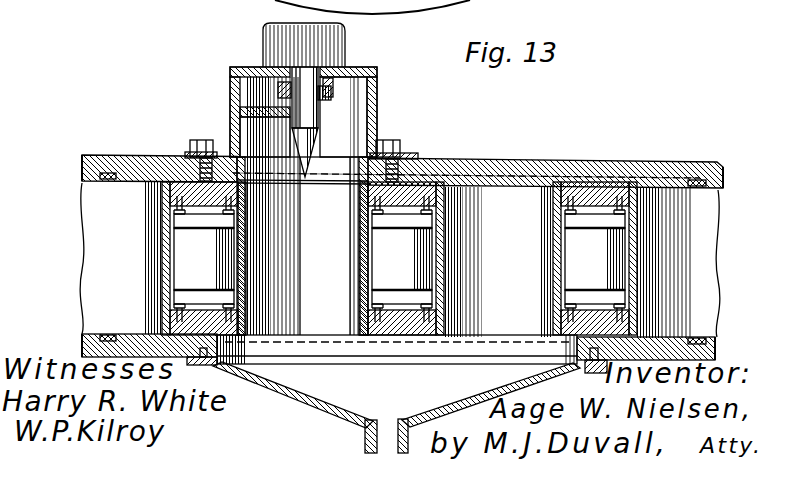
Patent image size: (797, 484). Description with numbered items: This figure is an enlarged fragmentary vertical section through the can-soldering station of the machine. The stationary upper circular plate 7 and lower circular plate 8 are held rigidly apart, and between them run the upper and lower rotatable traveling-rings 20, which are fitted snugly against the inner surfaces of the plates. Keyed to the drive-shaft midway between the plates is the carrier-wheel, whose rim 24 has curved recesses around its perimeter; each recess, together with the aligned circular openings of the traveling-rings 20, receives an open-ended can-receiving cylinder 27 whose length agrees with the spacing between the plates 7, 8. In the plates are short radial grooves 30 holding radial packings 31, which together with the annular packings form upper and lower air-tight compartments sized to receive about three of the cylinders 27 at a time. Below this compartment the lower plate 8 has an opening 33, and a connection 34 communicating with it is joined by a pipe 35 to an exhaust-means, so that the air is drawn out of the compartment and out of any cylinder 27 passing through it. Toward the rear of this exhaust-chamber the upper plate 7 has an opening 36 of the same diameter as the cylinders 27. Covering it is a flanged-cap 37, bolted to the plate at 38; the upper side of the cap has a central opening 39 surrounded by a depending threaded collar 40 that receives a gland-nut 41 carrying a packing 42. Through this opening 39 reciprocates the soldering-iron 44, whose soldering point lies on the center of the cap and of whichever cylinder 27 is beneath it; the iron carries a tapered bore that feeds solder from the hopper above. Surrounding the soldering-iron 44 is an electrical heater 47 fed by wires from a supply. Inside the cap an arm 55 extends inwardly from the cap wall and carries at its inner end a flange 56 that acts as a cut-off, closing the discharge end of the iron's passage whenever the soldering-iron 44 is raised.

The upper circular plate 7 is at (606, 163).
The lower circular plate 8 is at (716, 354).
The rotatable traveling-ring 20 is at (590, 180).
The rim 24 is at (402, 258).
The can-receiving cylinder 27 is at (400, 259).
The radial groove 30 is at (105, 173).
The radial packing 31 is at (100, 181).
The opening 33 is at (280, 352).
The connection 34 is at (327, 393).
The pipe 35 is at (372, 438).
The opening 36 is at (354, 192).
The flanged-cap 37 is at (377, 88).
The bolt 38 is at (402, 140).
The central opening 39 is at (328, 82).
The threaded flange or collar 40 is at (334, 92).
The gland-nut 41 is at (328, 99).
The packing 42 is at (232, 82).
The soldering-iron 44 is at (311, 134).
The electrical heater 47 is at (263, 45).
The arm 55 is at (252, 114).
The flange 56 is at (278, 124).